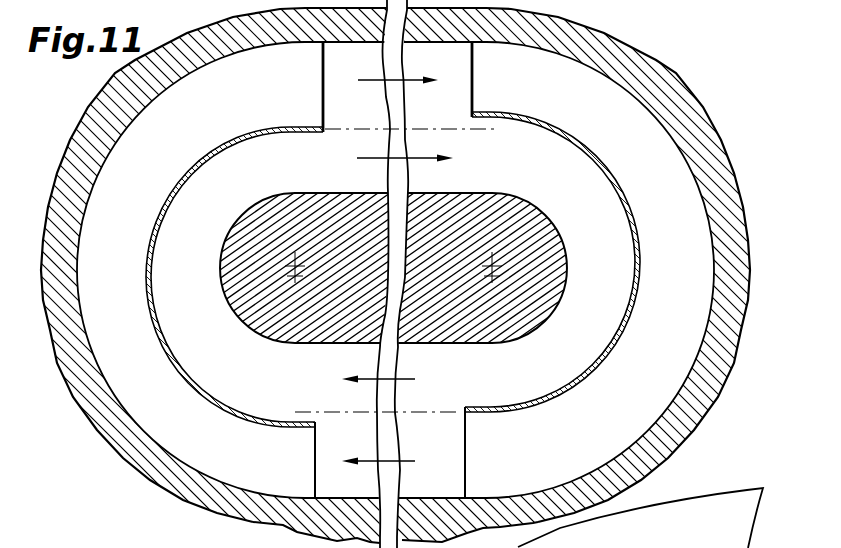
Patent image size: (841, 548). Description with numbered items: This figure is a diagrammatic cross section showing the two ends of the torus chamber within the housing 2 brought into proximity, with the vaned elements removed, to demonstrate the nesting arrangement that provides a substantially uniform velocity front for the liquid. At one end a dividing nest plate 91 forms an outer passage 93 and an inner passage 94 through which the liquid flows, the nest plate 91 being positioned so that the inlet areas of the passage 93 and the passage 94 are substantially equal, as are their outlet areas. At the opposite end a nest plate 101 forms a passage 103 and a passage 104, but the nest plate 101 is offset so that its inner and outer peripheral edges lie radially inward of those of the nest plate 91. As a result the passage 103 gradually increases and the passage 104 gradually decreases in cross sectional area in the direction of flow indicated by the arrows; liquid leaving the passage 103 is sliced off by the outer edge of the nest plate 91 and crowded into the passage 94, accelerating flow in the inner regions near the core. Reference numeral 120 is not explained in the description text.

The nest plate 101 is at (162, 209).
The passage 103 is at (229, 270).
The passage 104 is at (420, 274).
The nest plate 91 is at (577, 135).
The passage 93 is at (589, 270).
The passage 94 is at (443, 271).
The hub 120 is at (333, 535).
The housing 2 is at (640, 518).